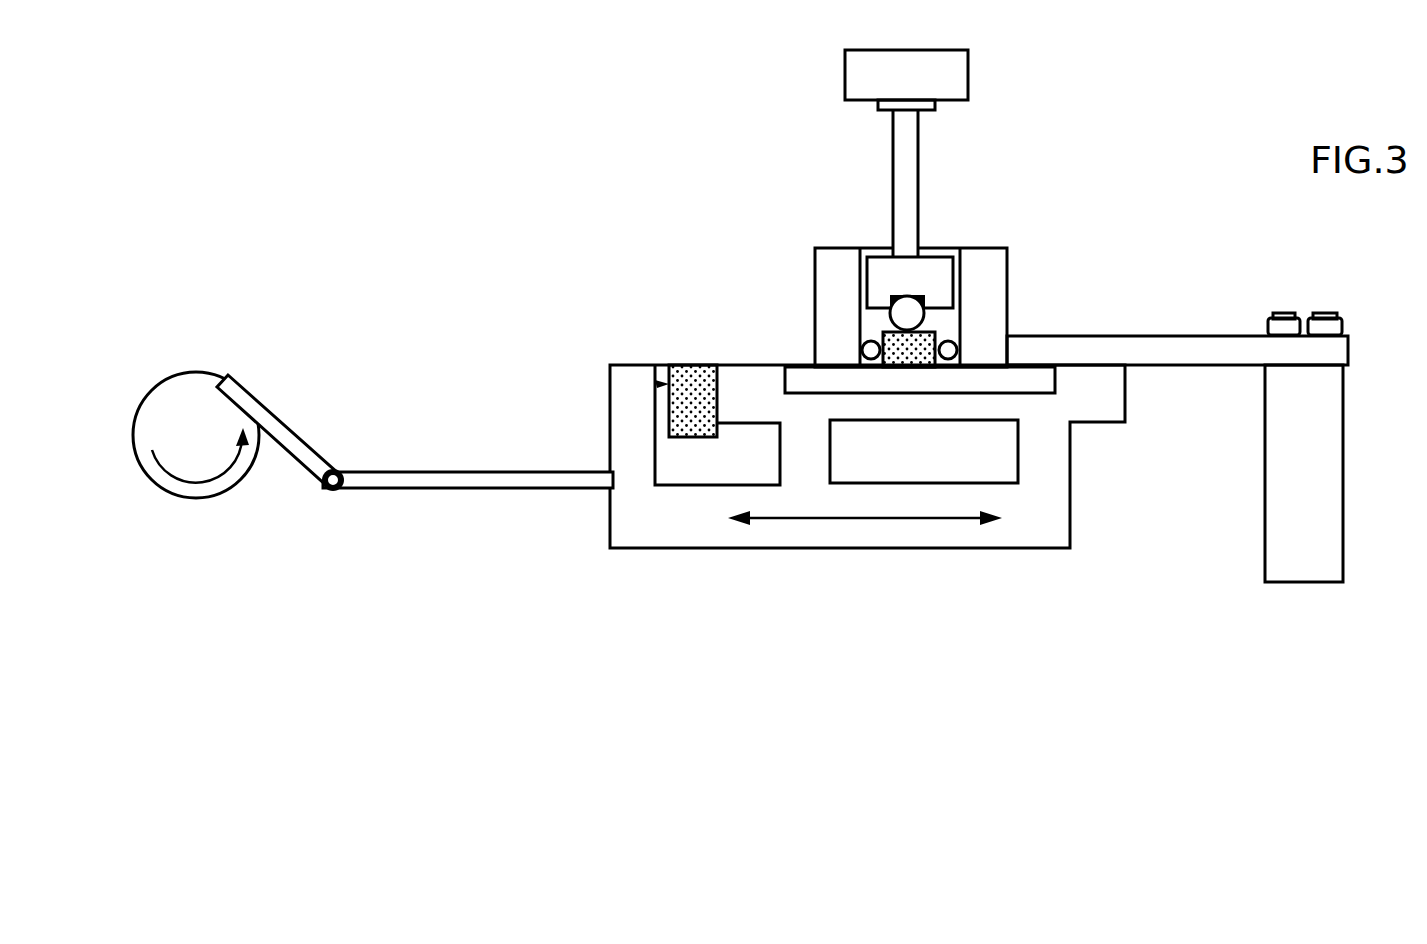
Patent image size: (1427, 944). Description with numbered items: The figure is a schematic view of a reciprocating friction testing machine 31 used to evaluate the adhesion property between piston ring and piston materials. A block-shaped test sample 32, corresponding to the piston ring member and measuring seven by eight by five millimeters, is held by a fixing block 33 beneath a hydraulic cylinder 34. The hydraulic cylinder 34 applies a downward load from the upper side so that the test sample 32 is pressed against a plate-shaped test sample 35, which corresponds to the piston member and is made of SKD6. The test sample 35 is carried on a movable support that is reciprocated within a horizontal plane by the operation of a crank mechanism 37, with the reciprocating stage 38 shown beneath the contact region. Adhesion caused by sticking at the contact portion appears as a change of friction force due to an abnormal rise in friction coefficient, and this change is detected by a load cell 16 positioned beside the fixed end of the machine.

The reciprocating friction testing machine 31 is at (1085, 148).
The hydraulic cylinder 34 is at (968, 79).
The fixing block 33 is at (990, 248).
The test sample 32 is at (937, 332).
The test sample 35 is at (1045, 387).
The movable stage 38 is at (942, 533).
The load cell 16 is at (692, 360).
The crank mechanism 37 is at (297, 462).